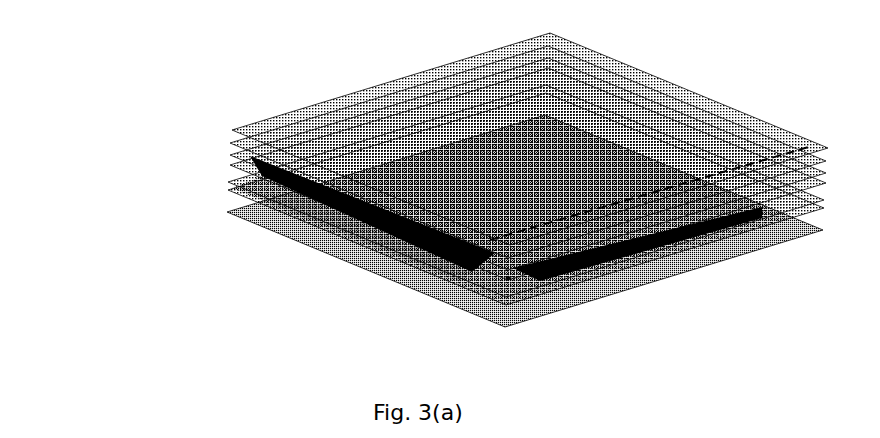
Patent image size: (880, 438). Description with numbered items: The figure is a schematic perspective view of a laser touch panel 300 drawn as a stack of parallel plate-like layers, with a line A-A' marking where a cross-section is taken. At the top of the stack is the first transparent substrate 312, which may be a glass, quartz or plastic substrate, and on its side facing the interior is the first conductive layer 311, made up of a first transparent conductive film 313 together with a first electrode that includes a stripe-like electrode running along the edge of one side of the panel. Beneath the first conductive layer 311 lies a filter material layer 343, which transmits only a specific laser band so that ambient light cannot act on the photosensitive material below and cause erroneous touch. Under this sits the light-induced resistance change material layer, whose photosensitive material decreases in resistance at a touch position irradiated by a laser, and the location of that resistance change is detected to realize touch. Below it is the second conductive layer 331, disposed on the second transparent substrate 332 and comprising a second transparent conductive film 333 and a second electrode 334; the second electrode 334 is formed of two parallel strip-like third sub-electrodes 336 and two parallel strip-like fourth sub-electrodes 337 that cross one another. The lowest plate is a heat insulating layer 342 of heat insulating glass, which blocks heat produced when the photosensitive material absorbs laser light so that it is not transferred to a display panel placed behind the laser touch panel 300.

The laser touch panel 300 is at (347, 51).
The first conductive layer 311 is at (425, 151).
The first transparent substrate 312 is at (232, 130).
The first transparent conductive film 313 is at (230, 143).
The filter material layer 343 is at (230, 165).
The second transparent substrate 332 is at (228, 186).
The heat insulating layer 342 is at (247, 212).
The second conductive layer 331 is at (497, 263).
The second electrode 334 is at (371, 251).
The third sub-electrode 336 is at (475, 287).
The fourth sub-electrode 337 is at (495, 300).
The second transparent conductive film 333 is at (480, 312).